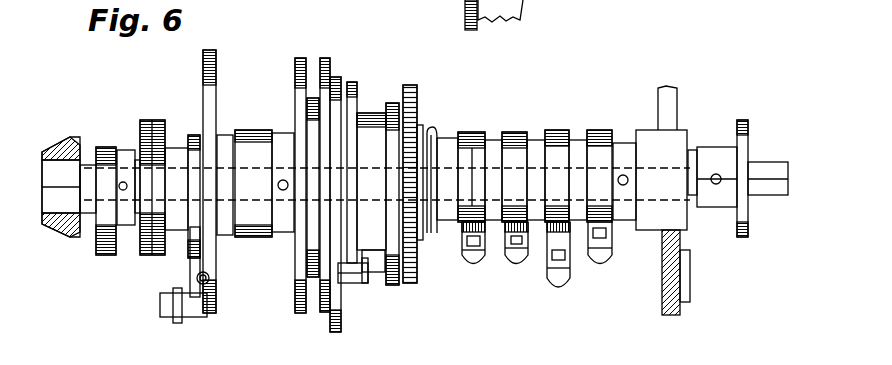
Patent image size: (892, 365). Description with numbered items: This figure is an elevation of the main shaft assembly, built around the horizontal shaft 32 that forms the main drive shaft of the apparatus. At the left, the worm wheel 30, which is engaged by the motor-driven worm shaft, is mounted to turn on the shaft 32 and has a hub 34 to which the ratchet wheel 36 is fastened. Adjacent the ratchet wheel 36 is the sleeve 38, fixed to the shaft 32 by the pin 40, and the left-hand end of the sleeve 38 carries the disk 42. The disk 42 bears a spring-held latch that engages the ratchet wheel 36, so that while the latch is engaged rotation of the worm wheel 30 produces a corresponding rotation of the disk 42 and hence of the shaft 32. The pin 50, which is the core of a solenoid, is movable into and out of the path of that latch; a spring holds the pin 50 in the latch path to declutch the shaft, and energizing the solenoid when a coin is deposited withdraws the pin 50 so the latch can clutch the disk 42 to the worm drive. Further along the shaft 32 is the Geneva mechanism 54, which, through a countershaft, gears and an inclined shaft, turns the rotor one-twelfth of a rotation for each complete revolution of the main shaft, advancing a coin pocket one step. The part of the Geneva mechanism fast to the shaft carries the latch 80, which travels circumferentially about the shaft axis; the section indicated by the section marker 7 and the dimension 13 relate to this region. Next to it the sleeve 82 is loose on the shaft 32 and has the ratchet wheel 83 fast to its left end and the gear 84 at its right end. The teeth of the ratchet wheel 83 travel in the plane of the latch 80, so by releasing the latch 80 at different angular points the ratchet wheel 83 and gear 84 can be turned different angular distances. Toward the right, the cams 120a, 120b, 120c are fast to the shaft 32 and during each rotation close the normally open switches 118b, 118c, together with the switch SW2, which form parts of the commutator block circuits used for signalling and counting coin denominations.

The worm wheel 30 is at (147, 120).
The hub 34 is at (177, 140).
The ratchet wheel 36 is at (192, 133).
The sleeve 38 is at (223, 133).
The pin 40 is at (283, 190).
The disk 42 is at (217, 65).
The pin 50 is at (197, 317).
The Geneva mechanism 54 is at (308, 47).
The section line 7 is at (332, 33).
The dimension 13 is at (380, 62).
The latch 80 is at (365, 283).
The sleeve 82 is at (372, 118).
The ratchet wheel 83 is at (350, 110).
The gear 84 is at (410, 110).
The cam 120a is at (473, 132).
The cam 120b is at (515, 132).
The cam 120c is at (552, 128).
The switch 118b is at (518, 268).
The switch 118c is at (482, 262).
The switch SW2 is at (608, 247).
The shaft 32 is at (688, 157).